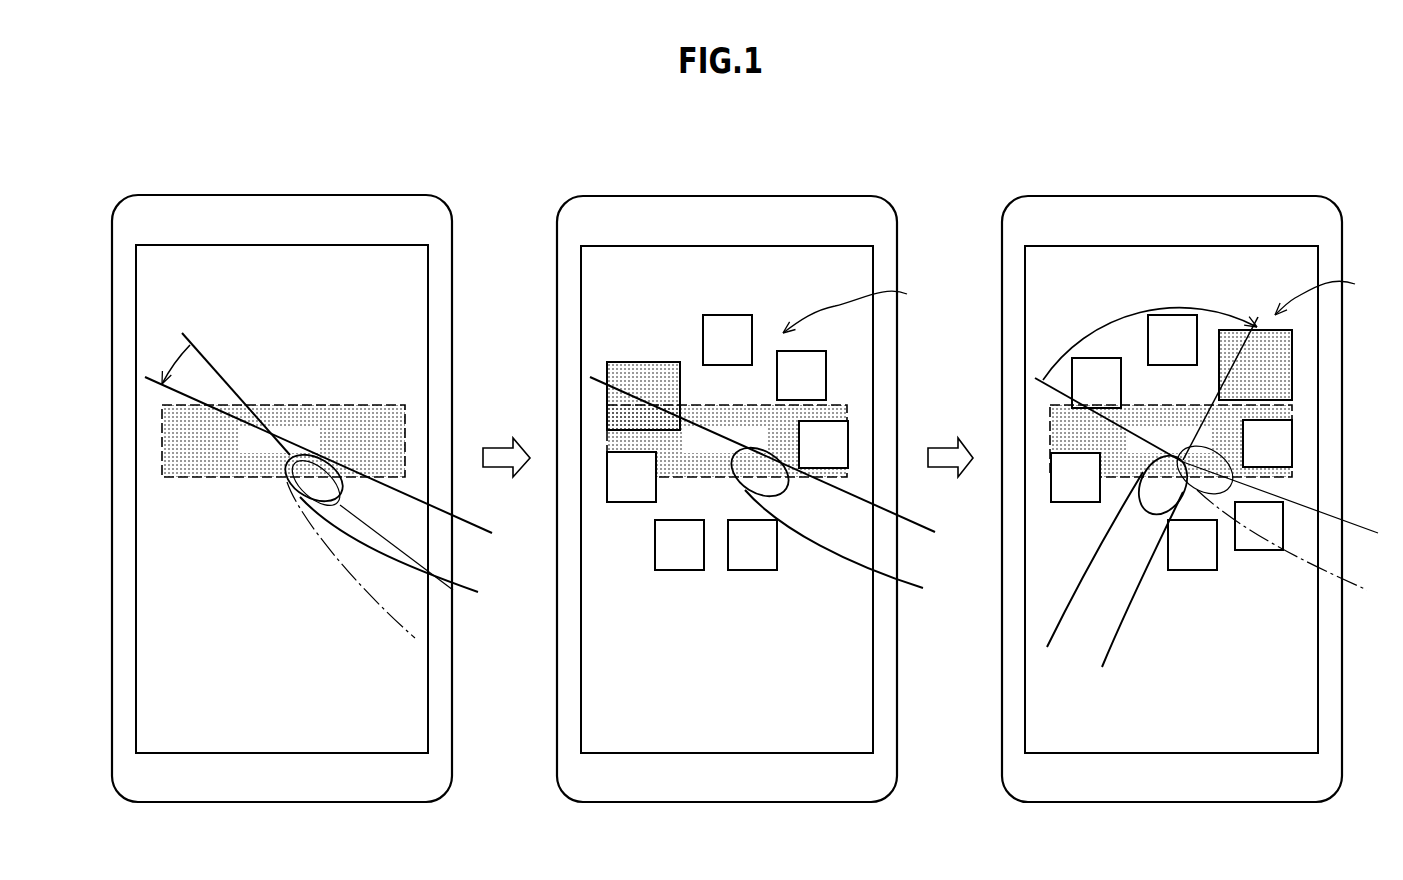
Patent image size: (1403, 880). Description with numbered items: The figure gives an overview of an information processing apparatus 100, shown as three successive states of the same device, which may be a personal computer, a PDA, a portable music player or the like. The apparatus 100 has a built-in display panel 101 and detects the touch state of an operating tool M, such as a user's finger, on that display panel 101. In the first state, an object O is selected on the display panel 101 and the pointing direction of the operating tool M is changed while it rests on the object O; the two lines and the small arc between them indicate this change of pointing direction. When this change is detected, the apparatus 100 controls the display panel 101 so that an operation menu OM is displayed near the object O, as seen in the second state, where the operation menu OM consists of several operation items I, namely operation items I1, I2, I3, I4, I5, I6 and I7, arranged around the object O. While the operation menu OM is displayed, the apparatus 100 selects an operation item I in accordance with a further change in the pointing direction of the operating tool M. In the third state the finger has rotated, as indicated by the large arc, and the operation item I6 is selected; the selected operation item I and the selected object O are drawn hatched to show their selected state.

The information processing apparatus 100 is at (343, 196).
The display panel 101 is at (225, 245).
The object O is at (405, 407).
The operation menu OM is at (1088, 300).
The operation item I is at (986, 442).
The operation item I1 is at (1005, 536).
The operation item I2 is at (936, 545).
The operation item I3 is at (853, 477).
The operation item I4 is at (864, 394).
The operation item I5 is at (950, 340).
The operation item I6 is at (1034, 365).
The operation item I7 is at (1045, 444).
The operating tool M is at (470, 521).